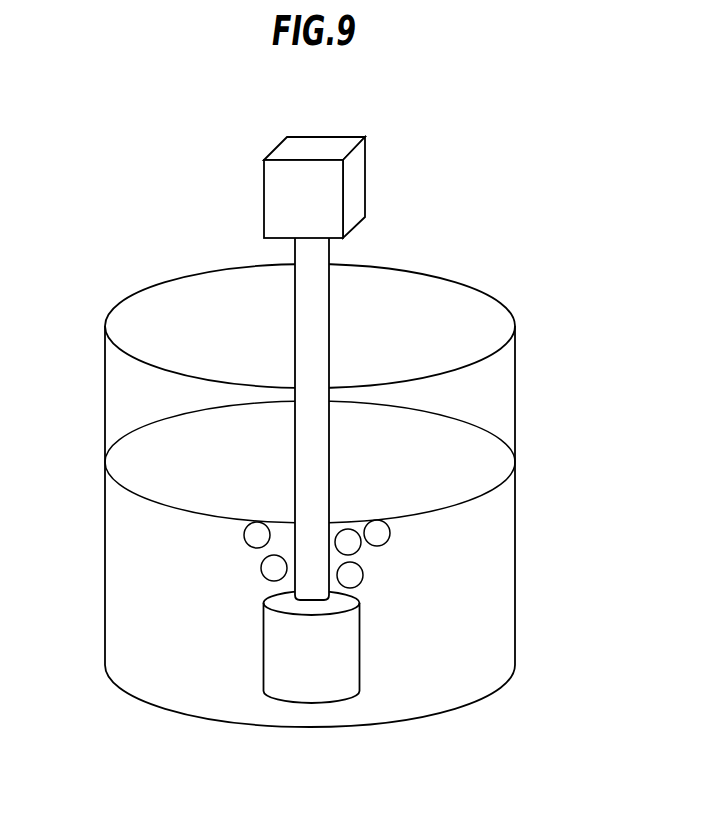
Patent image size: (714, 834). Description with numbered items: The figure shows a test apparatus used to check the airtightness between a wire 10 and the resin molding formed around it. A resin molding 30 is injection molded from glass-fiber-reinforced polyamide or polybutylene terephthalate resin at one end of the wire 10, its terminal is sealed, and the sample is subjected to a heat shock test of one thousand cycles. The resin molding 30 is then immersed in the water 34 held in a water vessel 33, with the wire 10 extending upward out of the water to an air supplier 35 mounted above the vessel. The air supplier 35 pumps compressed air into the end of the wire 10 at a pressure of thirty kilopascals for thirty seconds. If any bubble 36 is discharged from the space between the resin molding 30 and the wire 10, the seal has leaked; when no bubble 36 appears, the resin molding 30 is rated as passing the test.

The wire 10 is at (325, 297).
The resin molding 30 is at (323, 690).
The water vessel 33 is at (115, 308).
The water 34 is at (128, 594).
The air supplier 35 is at (353, 168).
The bubble 36 is at (391, 533).